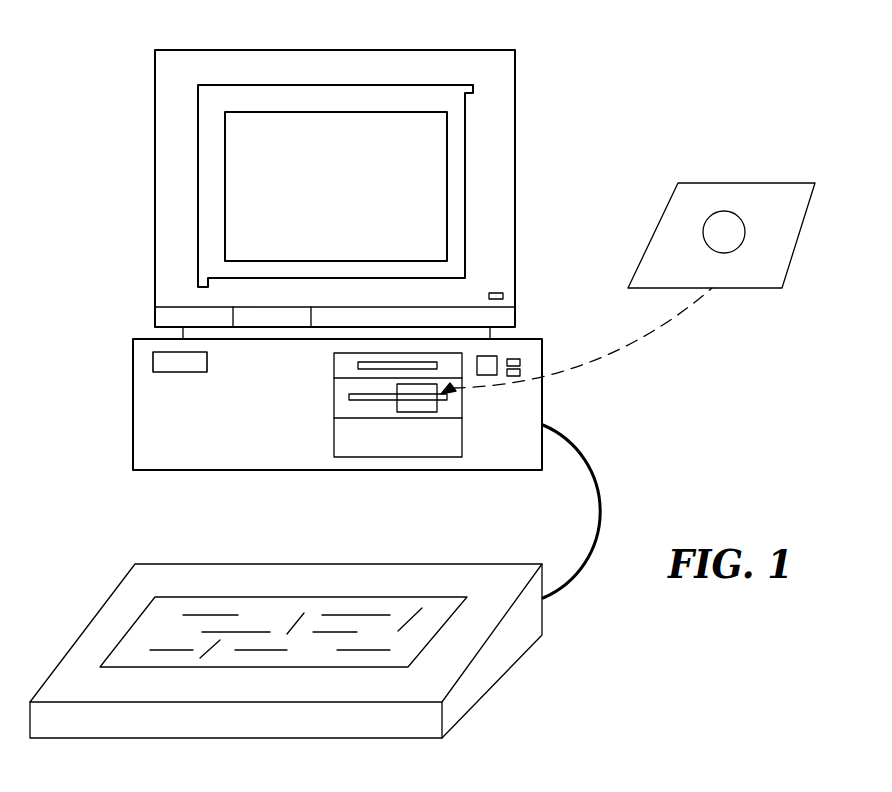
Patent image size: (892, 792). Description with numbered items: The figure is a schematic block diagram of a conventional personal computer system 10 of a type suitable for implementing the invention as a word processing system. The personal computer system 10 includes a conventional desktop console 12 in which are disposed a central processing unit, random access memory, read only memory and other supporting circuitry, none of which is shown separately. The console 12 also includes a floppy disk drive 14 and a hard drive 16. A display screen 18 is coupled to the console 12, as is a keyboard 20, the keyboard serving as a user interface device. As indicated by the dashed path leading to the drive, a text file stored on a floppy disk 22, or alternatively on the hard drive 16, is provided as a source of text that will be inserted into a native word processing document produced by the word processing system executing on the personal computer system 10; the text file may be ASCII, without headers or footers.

The personal computer system 10 is at (668, 650).
The desktop console 12 is at (373, 429).
The floppy disk drive 14 is at (452, 408).
The hard drive 16 is at (388, 443).
The display screen 18 is at (507, 158).
The keyboard 20 is at (493, 672).
The floppy disk 22 is at (631, 287).